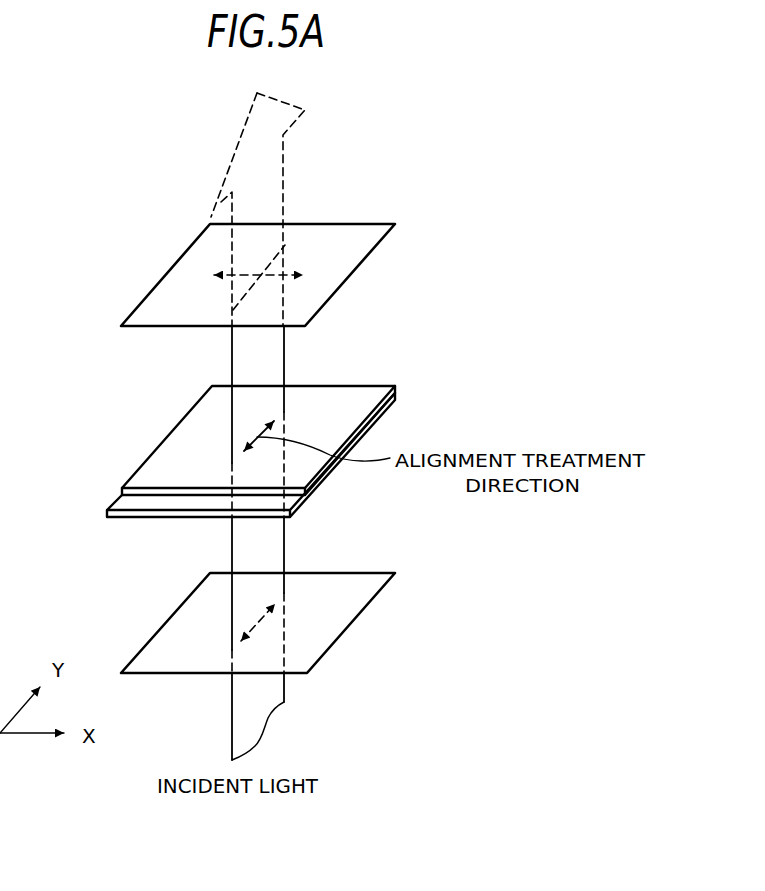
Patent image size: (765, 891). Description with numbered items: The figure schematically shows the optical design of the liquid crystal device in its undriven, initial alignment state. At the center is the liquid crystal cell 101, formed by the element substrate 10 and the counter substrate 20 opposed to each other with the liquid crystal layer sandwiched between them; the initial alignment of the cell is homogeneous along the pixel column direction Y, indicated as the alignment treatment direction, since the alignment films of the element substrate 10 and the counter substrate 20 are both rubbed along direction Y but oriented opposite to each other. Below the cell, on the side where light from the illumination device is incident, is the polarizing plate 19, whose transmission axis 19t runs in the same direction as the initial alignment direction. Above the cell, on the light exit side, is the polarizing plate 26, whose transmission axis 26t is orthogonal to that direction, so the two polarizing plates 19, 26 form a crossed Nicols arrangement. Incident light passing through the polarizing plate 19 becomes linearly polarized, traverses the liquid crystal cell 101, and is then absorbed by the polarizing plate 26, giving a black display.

The polarizing plate 26 is at (370, 257).
The transmission axis 26t is at (265, 277).
The counter substrate 20 is at (397, 390).
The element substrate 10 is at (397, 400).
The liquid crystal cell 101 is at (325, 437).
The polarizing plate 19 is at (370, 605).
The transmission axis 19t is at (255, 628).